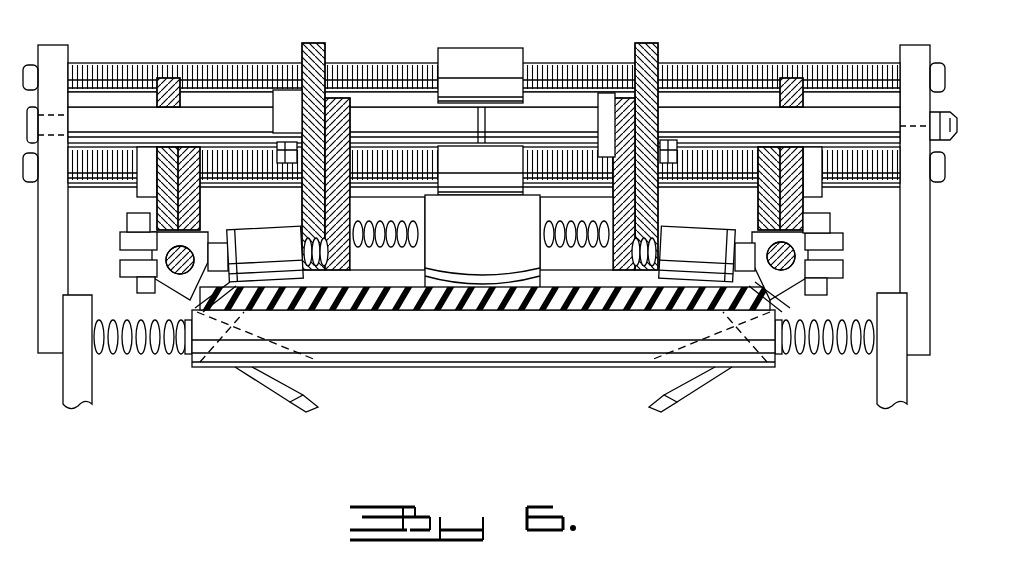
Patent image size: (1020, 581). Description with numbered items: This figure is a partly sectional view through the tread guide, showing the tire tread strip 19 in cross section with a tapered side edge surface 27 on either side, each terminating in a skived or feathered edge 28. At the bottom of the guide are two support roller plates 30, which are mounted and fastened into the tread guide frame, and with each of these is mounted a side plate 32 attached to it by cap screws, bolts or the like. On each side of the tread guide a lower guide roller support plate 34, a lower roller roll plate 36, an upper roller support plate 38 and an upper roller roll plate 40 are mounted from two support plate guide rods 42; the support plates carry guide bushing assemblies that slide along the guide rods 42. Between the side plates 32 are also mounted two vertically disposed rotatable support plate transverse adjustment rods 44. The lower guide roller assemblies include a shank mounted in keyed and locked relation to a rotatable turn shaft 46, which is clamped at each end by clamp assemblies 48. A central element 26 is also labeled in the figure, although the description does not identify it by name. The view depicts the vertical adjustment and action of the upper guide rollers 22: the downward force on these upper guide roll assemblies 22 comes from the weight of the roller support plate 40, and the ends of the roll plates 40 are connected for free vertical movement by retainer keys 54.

The tire tread strip 19 is at (380, 288).
The upper guide rollers 22 is at (268, 235).
The center block 26 is at (512, 259).
The tapered side edge surface 27 is at (275, 305).
The skived or feathered edge 28 is at (262, 278).
The support roller plates 30 is at (87, 387).
The side plate 32 is at (60, 250).
The lower guide roller support plate 34 is at (163, 78).
The lower roller roll plate 36 is at (198, 207).
The upper roller support plate 38 is at (310, 45).
The upper roller roll plate 40 is at (350, 198).
The support plate guide rods 42 is at (95, 110).
The support plate transverse adjustment rods 44 is at (402, 68).
The rotatable turn shaft 46 is at (782, 265).
The clamp assemblies 48 is at (838, 240).
The retainer keys 54 is at (292, 128).